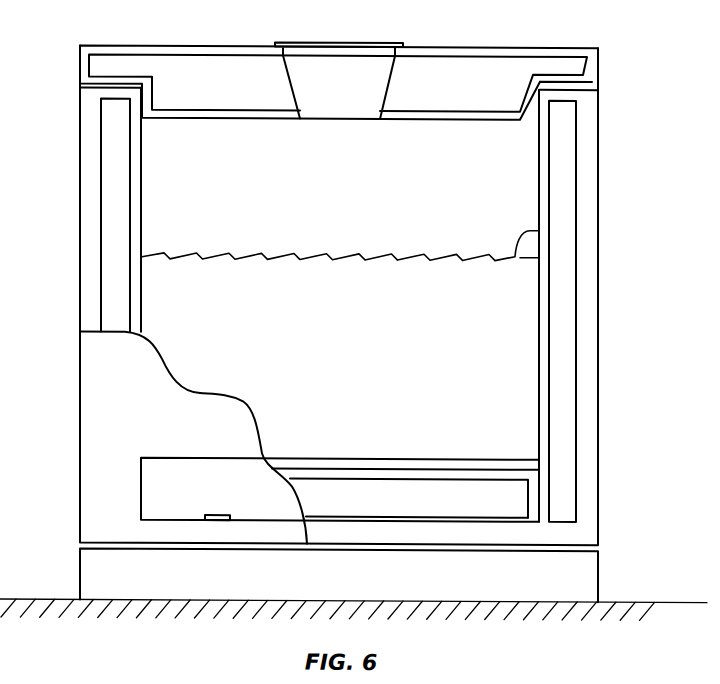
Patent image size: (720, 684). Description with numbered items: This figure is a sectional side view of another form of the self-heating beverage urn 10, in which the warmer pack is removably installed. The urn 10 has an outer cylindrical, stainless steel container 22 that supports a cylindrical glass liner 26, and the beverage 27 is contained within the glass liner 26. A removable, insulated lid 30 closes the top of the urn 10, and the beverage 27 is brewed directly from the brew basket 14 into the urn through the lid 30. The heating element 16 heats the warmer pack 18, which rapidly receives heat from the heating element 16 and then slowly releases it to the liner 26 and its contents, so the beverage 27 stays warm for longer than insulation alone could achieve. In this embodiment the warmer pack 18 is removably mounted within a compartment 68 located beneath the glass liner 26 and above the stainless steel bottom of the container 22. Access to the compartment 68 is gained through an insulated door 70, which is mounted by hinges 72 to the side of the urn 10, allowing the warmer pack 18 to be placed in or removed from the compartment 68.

The self-heating beverage urn 10 is at (602, 173).
The brew basket 14 is at (371, 40).
The heating element 16 is at (588, 564).
The warmer pack 18 is at (513, 493).
The outer cylindrical stainless steel container 22 is at (588, 329).
The glass liner 26 is at (549, 408).
The beverage 27 is at (539, 228).
The removable insulated lid 30 is at (593, 79).
The compartment 68 is at (438, 515).
The insulated door 70 is at (173, 483).
The hinges 72 is at (217, 519).